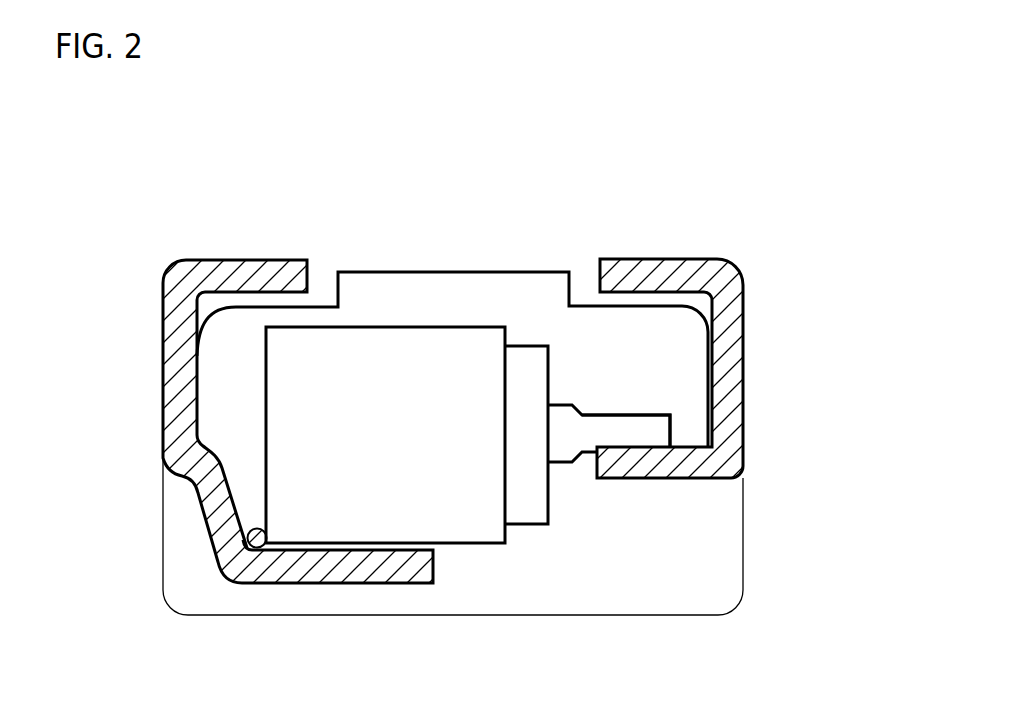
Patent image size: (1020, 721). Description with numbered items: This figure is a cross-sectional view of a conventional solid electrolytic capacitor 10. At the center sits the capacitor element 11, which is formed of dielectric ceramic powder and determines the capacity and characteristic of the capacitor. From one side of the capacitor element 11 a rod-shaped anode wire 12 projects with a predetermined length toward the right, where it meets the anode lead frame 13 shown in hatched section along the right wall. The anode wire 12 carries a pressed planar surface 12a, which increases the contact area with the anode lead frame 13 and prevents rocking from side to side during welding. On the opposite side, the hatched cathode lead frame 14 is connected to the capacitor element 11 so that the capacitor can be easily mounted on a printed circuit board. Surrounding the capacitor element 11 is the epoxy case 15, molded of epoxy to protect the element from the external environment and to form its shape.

The solid electrolytic capacitor 10 is at (757, 216).
The capacitor element 11 is at (377, 350).
The anode wire 12 is at (652, 415).
The planar surface 12a is at (608, 420).
The anode lead frame 13 is at (738, 417).
The cathode lead frame 14 is at (170, 422).
The epoxy case 15 is at (540, 300).